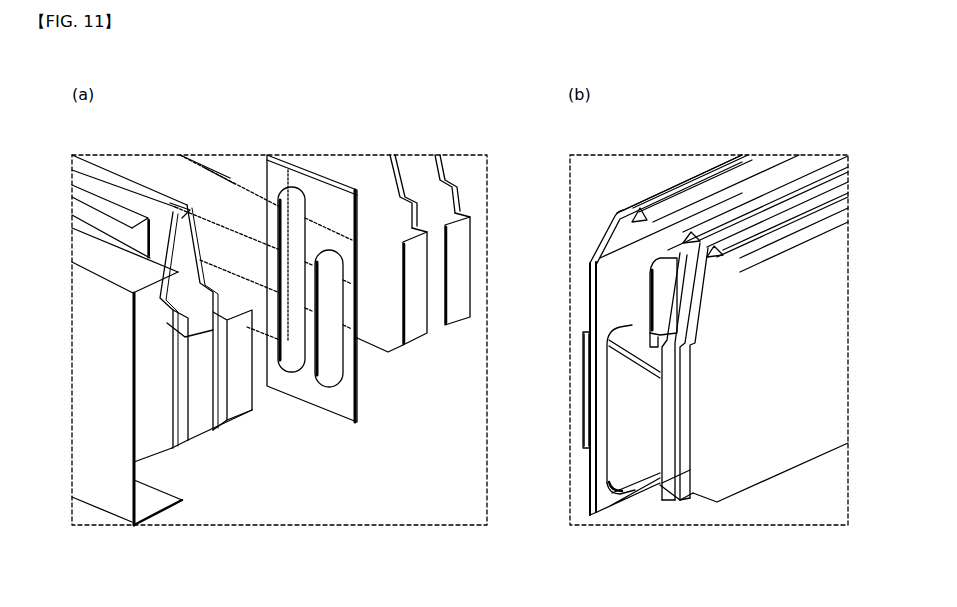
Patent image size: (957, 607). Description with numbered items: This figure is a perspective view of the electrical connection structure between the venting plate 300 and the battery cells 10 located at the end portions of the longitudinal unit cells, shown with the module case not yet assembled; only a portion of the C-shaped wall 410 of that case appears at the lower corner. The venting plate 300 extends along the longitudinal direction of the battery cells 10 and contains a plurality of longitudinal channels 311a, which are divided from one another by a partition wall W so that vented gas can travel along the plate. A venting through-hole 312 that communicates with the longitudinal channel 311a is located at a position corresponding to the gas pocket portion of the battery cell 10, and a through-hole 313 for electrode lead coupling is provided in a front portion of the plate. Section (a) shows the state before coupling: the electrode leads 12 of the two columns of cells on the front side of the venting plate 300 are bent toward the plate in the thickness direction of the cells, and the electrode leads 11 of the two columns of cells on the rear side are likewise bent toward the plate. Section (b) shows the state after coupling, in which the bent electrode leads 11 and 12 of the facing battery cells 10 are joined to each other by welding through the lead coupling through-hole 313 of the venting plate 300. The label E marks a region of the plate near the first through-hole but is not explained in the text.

The battery cell 10 is at (90, 203).
The electrode lead 11 is at (418, 330).
The electrode lead 12 is at (202, 423).
The venting plate 300 is at (328, 168).
The longitudinal channel 311a is at (173, 180).
The venting through-hole 312 is at (292, 358).
The lead coupling through-hole 313 is at (332, 372).
The C-shaped wall 410 is at (107, 478).
The partition wall W is at (222, 170).
The electrode E is at (288, 170).